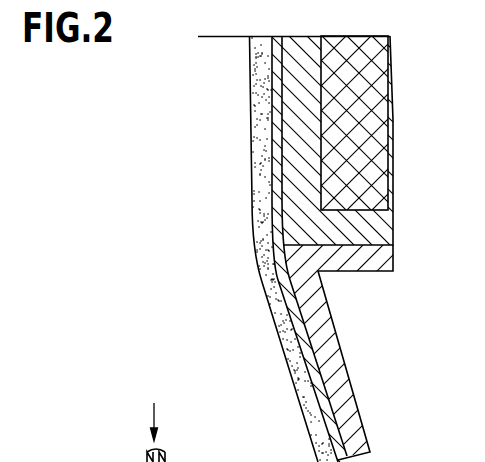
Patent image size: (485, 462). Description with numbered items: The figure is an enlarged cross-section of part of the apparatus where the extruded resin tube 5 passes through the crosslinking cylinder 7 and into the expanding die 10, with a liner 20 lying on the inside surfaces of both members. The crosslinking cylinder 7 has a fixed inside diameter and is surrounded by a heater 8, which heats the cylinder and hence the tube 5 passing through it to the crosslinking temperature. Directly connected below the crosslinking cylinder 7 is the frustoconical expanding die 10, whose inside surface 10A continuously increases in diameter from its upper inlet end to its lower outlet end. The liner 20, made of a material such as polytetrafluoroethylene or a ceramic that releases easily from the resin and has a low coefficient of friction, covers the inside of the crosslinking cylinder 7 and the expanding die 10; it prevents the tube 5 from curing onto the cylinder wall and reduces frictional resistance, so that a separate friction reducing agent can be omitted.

The tube 5 is at (262, 58).
The liner 20 is at (276, 50).
The crosslinking cylinder 7 is at (311, 50).
The heater 8 is at (362, 44).
The expanding die 10 is at (325, 313).
The inside surface 10A is at (302, 360).